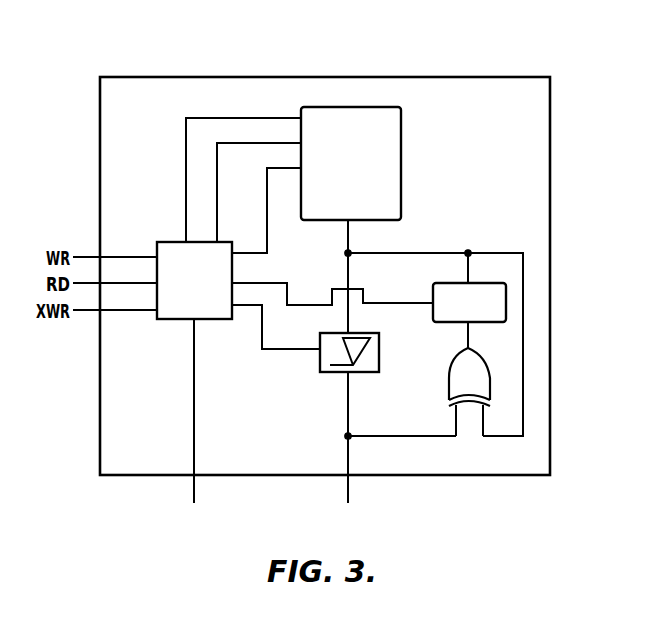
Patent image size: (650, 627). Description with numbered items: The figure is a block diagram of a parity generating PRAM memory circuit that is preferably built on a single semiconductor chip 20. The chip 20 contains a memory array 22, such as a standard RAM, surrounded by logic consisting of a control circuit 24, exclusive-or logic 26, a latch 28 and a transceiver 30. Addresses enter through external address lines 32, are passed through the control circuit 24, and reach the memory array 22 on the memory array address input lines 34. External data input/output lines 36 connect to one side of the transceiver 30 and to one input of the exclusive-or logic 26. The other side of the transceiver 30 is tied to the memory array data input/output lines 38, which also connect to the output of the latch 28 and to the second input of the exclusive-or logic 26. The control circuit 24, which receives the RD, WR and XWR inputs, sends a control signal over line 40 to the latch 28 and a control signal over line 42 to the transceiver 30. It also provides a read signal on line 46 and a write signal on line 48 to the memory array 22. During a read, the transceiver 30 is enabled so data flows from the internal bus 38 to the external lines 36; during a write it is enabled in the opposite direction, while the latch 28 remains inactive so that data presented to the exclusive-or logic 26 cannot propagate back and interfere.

The semiconductor chip 20 is at (537, 52).
The memory array 22 is at (401, 141).
The control circuit 24 is at (171, 320).
The exclusive-or logic 26 is at (457, 361).
The latch 28 is at (489, 283).
The transceiver 30 is at (320, 357).
The external address lines 32 is at (196, 409).
The memory array address input lines 34 is at (267, 212).
The external data input/output lines 36 is at (350, 410).
The memory array data input/output lines 38 is at (348, 238).
The control line to latch 40 is at (290, 289).
The control line to transceiver 42 is at (263, 330).
The read signal line 46 is at (231, 100).
The write signal line 48 is at (229, 143).